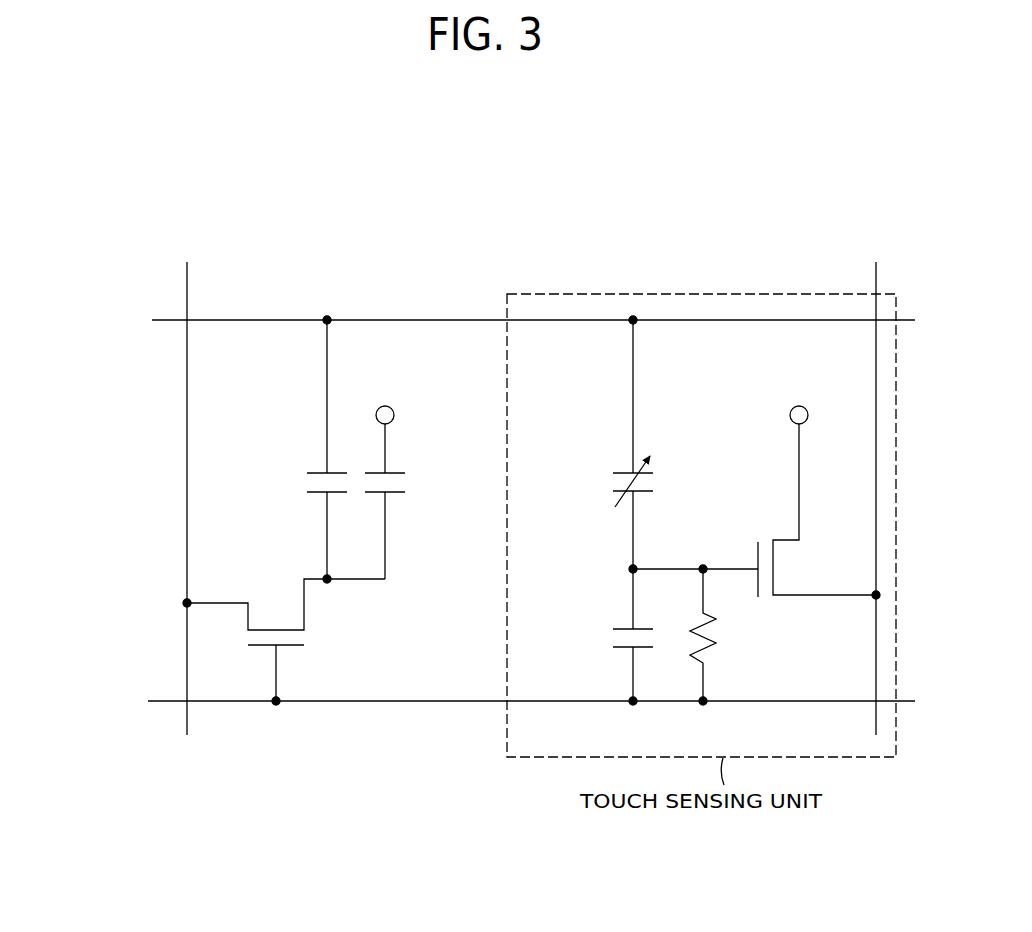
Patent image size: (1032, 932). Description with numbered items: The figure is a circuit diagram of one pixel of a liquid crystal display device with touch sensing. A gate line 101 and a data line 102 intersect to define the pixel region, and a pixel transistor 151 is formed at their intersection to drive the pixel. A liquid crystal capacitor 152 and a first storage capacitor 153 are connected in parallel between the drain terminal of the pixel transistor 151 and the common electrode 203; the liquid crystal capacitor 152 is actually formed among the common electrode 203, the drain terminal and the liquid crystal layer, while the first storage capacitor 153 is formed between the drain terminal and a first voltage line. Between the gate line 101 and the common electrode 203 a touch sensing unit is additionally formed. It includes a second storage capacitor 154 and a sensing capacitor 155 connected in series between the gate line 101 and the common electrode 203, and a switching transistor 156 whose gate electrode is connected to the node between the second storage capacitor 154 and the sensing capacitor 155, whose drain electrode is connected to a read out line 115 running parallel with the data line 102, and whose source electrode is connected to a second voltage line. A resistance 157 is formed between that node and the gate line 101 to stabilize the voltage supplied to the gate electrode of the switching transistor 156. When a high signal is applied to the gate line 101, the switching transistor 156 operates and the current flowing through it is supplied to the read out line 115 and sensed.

The gate line 101 is at (486, 695).
The data line 102 is at (178, 477).
The read out line 115 is at (869, 483).
The pixel transistor 151 is at (255, 632).
The liquid crystal capacitor 152 is at (273, 451).
The first storage capacitor 153 is at (412, 474).
The second storage capacitor 154 is at (588, 633).
The sensing capacitor 155 is at (584, 444).
The switching transistor 156 is at (813, 486).
The resistance 157 is at (716, 641).
The common electrode 203 is at (478, 312).